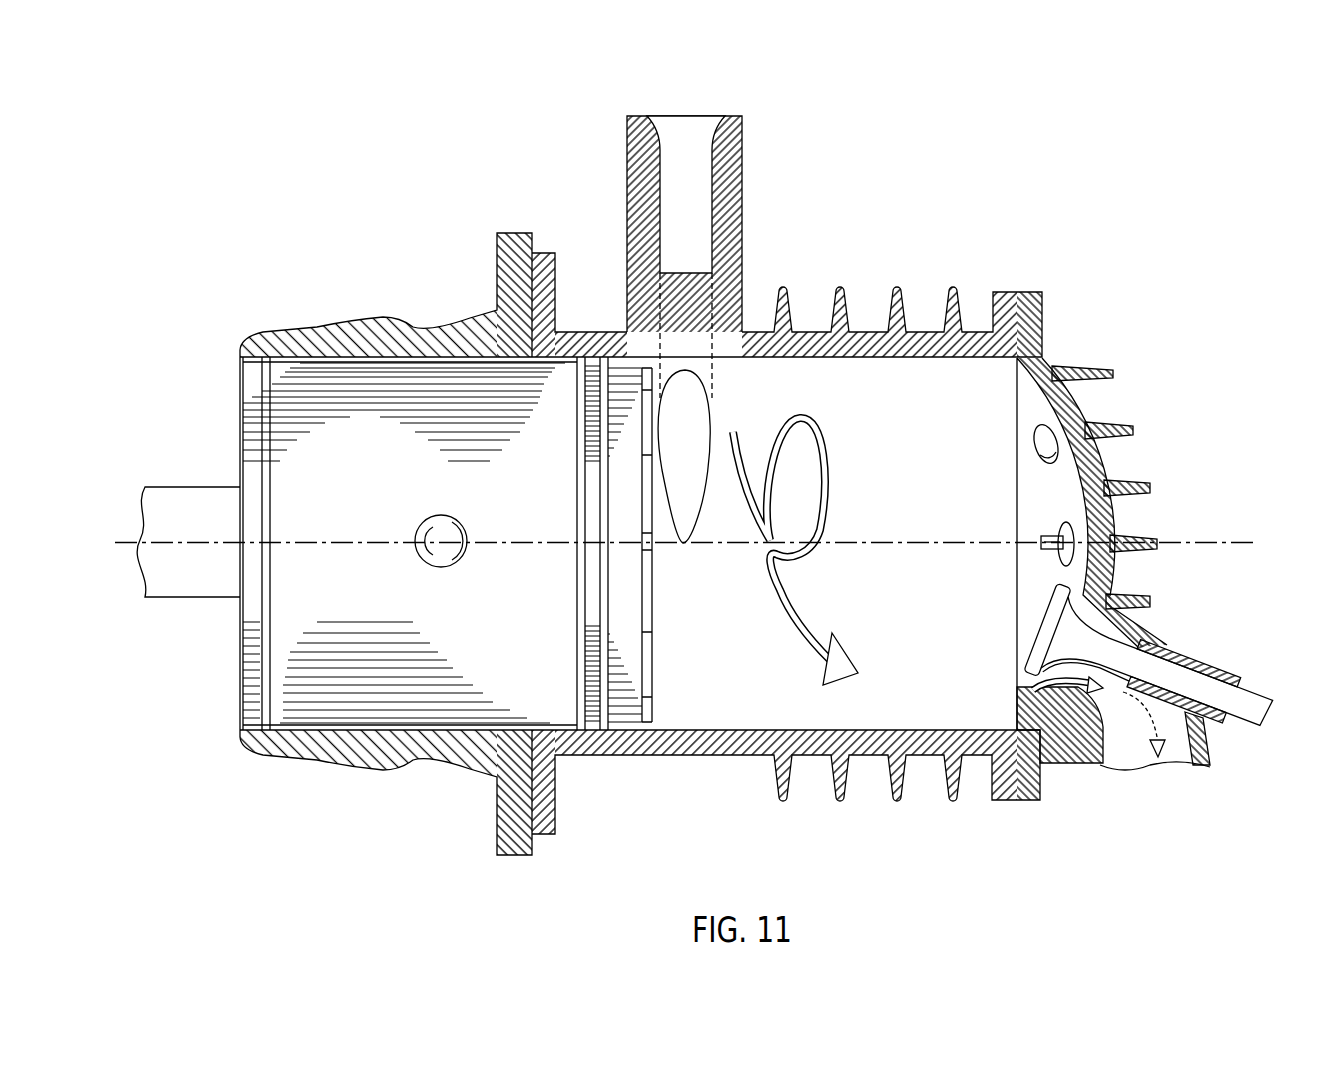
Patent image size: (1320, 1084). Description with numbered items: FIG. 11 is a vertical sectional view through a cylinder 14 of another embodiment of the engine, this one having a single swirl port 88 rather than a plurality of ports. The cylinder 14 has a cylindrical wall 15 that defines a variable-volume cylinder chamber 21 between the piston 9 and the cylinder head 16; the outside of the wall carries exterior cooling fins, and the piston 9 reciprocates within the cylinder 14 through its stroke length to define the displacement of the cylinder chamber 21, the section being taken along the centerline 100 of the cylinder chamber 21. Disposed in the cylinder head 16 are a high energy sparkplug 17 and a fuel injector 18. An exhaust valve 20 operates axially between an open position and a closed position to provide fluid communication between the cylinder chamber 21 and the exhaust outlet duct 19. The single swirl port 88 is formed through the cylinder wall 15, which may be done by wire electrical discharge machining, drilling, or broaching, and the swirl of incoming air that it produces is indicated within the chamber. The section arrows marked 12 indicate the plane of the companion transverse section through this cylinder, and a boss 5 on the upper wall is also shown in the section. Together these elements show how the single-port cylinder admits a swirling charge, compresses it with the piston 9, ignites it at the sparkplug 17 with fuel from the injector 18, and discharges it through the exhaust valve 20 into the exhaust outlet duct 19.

The spark plug boss 5 is at (742, 185).
The piston 9 is at (392, 450).
The section line 12- 12 is at (685, 155).
The cylinder 14 is at (1072, 177).
The cylindrical wall 15 is at (918, 737).
The cylinder head 16 is at (1075, 422).
The high energy sparkplug 17 is at (1073, 537).
The fuel injector 18 is at (1045, 440).
The exhaust outlet duct 19 is at (1150, 641).
The exhaust valve 20 is at (1052, 632).
The cylinder chamber 21 is at (943, 385).
The swirl port 88 is at (673, 430).
The centerline of the cylinder chamber 100 is at (910, 547).